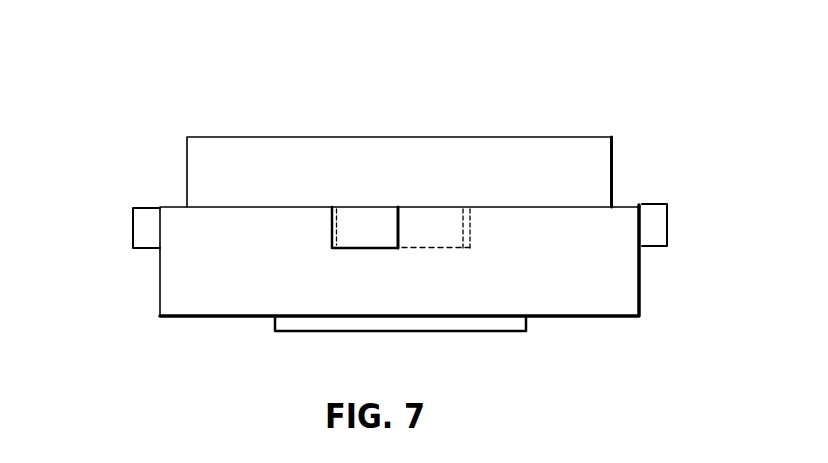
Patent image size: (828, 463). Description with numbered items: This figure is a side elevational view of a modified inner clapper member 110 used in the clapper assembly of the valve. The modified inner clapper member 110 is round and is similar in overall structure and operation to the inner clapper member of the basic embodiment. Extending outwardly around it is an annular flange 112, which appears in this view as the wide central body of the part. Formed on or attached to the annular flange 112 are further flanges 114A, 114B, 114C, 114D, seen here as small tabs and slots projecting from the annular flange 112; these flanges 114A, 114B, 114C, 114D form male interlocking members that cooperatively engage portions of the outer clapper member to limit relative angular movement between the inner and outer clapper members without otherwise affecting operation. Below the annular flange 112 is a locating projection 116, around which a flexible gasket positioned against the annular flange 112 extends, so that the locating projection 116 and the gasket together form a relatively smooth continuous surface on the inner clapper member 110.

The modified inner clapper member 110 is at (185, 183).
The annular flange 112 is at (628, 262).
The flange 114A is at (351, 235).
The flange 114B is at (660, 237).
The flange 114C is at (438, 230).
The flange 114D is at (145, 227).
The locating projection 116 is at (479, 322).